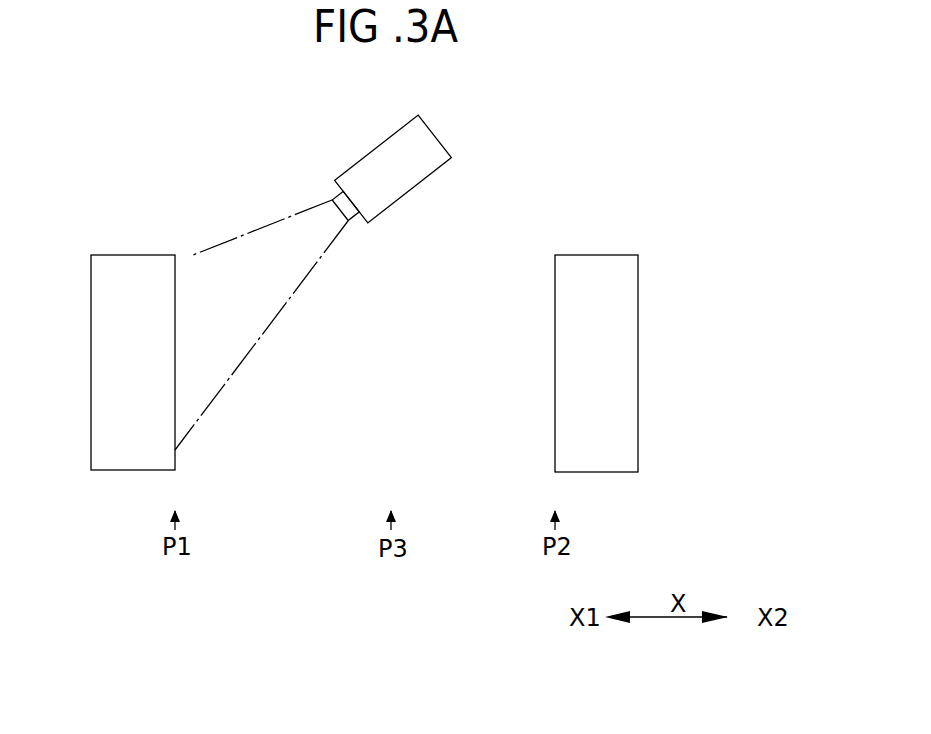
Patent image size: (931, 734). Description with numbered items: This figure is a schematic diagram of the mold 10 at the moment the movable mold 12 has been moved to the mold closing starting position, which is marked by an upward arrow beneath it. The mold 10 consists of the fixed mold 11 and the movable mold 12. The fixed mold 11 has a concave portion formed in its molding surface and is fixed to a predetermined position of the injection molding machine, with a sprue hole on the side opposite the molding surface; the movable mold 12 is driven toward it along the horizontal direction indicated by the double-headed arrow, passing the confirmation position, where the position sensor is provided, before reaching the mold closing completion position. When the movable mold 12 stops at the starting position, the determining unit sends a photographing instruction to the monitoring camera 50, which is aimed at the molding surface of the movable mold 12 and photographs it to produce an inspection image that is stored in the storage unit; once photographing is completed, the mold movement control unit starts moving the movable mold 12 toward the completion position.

The mold 10 is at (516, 170).
The fixed mold 11 is at (130, 254).
The movable mold 12 is at (600, 254).
The monitoring camera 50 is at (372, 148).